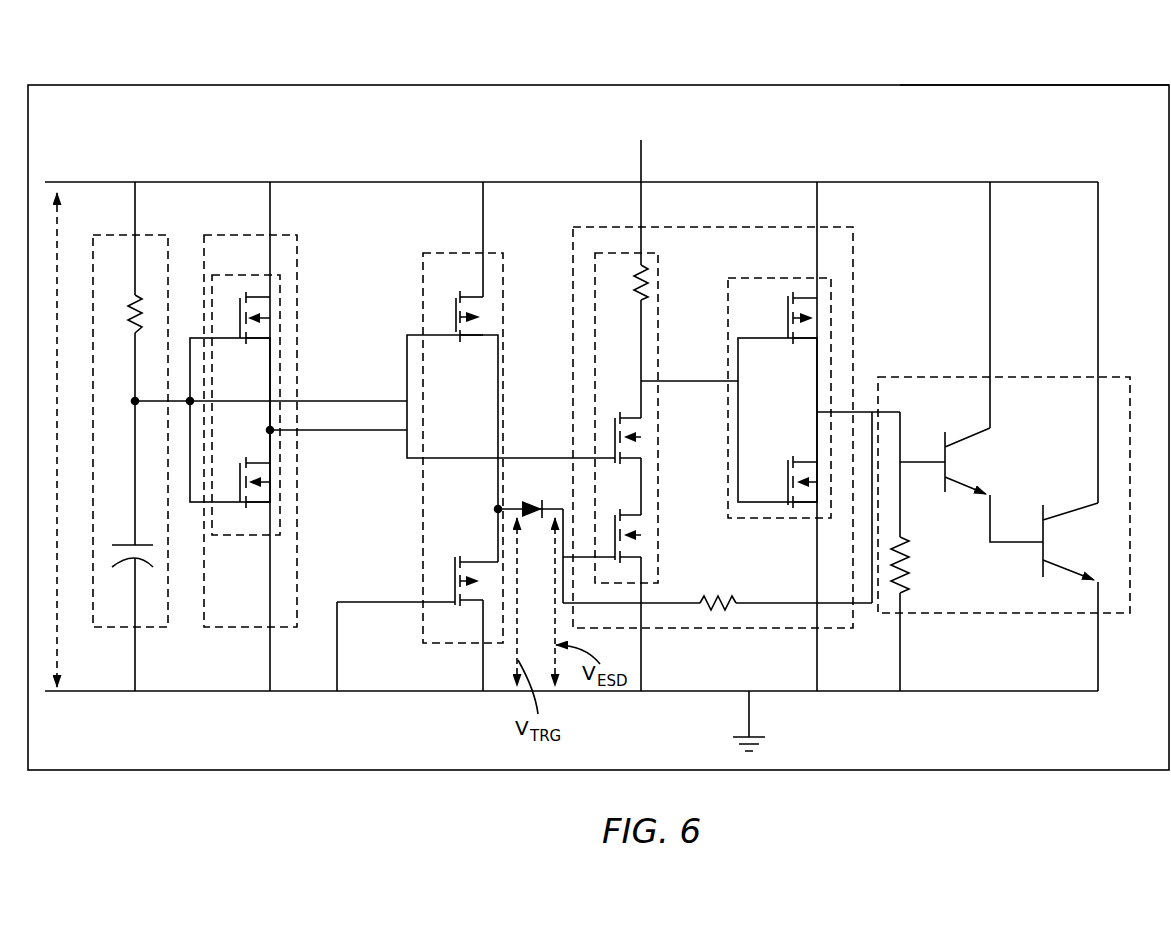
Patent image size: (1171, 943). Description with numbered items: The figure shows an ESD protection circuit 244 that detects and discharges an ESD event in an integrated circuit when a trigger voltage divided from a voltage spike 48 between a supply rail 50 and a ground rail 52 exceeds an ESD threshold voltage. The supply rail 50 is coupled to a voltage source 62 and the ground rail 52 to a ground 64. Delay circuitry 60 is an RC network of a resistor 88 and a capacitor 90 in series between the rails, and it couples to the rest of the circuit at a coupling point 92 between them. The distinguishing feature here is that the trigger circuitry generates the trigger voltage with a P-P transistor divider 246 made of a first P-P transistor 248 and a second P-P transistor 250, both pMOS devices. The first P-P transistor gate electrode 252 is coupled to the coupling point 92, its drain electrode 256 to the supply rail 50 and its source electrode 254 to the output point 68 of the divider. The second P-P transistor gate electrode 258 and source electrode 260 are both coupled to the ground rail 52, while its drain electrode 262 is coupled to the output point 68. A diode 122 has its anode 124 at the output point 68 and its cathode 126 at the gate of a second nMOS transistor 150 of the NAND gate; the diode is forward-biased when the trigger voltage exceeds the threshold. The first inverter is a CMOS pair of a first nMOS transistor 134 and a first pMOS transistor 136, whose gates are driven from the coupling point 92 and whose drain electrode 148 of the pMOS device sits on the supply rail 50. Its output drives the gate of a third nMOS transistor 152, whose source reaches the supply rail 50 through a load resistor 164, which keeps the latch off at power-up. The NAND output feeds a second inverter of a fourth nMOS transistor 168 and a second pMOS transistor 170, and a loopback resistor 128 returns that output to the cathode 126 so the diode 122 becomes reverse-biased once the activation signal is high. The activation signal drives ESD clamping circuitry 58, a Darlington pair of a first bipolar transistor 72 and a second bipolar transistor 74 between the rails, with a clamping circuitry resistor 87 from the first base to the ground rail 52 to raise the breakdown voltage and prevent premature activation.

The ESD protection circuit 244 is at (1025, 84).
The supply rail 50 is at (104, 181).
The ground rail 52 is at (115, 693).
The voltage spike 48 is at (68, 239).
The delay circuitry 60 is at (148, 235).
The resistor 88 is at (133, 300).
The capacitor 90 is at (122, 543).
The coupling point 92 is at (130, 397).
The first pMOS transistor drain electrode 148 is at (259, 296).
The first pMOS transistor 136 is at (263, 318).
The first nMOS transistor 134 is at (264, 484).
The P-P transistor divider 246 is at (492, 253).
The first P-P transistor gate electrode 252 is at (418, 335).
The first P-P transistor drain electrode 256 is at (470, 296).
The first P-P transistor 248 is at (482, 316).
The first P-P transistor source electrode 254 is at (472, 338).
The output point 68 is at (494, 505).
The diode 122 is at (535, 518).
The anode 124 is at (517, 508).
The cathode 126 is at (555, 508).
The second P-P transistor 250 is at (481, 581).
The second P-P transistor drain electrode 262 is at (480, 561).
The second P-P transistor source electrode 260 is at (472, 603).
The second P-P transistor gate electrode 258 is at (400, 601).
The load resistor 164 is at (657, 287).
The third nMOS transistor 152 is at (638, 437).
The second nMOS transistor 150 is at (638, 535).
The second pMOS transistor 170 is at (815, 318).
The fourth nMOS transistor 168 is at (812, 484).
The loopback resistor 128 is at (718, 602).
The ESD clamping circuitry 58 is at (1112, 377).
The clamping circuitry resistor 87 is at (912, 578).
The first bipolar transistor 72 is at (950, 462).
The second bipolar transistor 74 is at (1047, 548).
The voltage source 62 is at (678, 130).
The ground 64 is at (777, 737).